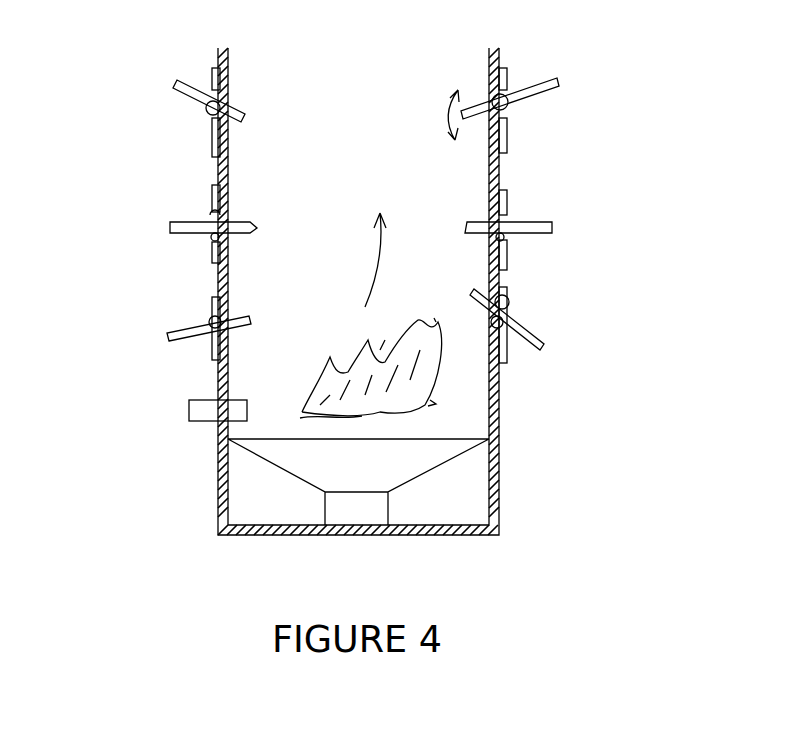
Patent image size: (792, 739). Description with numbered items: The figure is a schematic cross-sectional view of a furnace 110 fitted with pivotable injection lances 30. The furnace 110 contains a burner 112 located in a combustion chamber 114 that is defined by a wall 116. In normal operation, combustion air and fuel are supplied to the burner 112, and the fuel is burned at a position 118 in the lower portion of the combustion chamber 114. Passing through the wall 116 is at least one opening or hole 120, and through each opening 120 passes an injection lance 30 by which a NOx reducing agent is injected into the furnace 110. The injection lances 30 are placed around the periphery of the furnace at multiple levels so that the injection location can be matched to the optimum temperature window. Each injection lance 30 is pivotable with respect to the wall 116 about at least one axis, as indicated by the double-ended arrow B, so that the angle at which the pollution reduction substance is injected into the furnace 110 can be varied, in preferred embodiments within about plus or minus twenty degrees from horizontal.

The furnace 110 is at (593, 118).
The burner 112 is at (194, 400).
The combustion chamber 114 is at (428, 195).
The wall 116 is at (217, 273).
The position 118 is at (420, 383).
The opening or hole 120 is at (230, 100).
The injection lance 30 is at (190, 90).
The double-ended arrow B is at (442, 117).